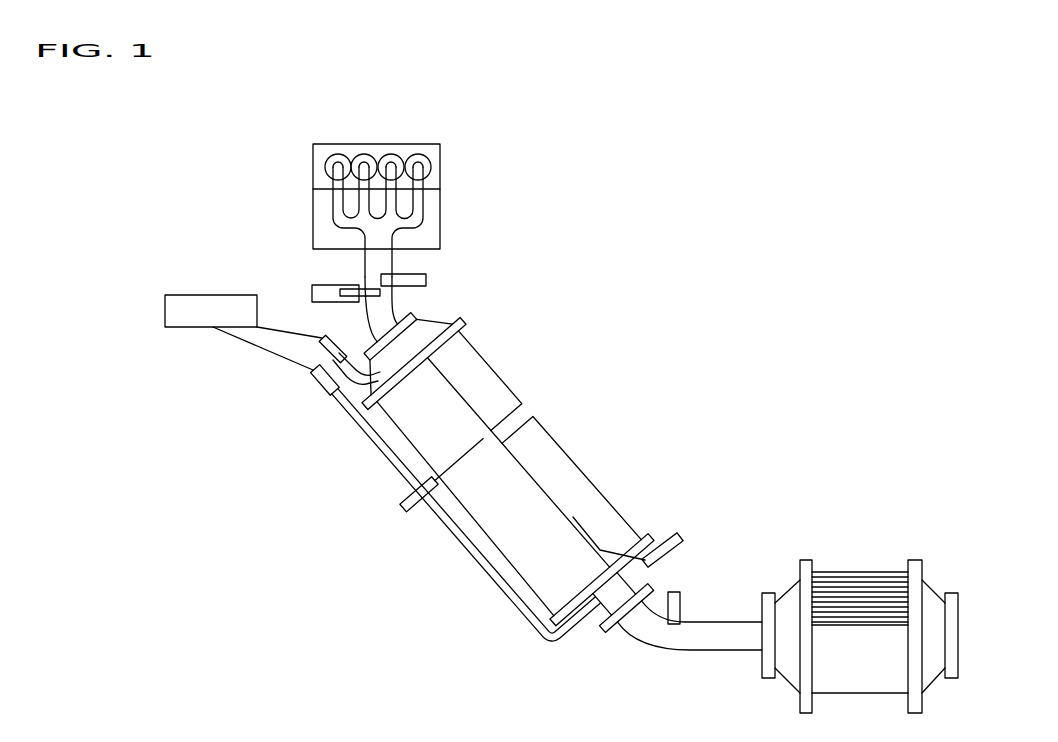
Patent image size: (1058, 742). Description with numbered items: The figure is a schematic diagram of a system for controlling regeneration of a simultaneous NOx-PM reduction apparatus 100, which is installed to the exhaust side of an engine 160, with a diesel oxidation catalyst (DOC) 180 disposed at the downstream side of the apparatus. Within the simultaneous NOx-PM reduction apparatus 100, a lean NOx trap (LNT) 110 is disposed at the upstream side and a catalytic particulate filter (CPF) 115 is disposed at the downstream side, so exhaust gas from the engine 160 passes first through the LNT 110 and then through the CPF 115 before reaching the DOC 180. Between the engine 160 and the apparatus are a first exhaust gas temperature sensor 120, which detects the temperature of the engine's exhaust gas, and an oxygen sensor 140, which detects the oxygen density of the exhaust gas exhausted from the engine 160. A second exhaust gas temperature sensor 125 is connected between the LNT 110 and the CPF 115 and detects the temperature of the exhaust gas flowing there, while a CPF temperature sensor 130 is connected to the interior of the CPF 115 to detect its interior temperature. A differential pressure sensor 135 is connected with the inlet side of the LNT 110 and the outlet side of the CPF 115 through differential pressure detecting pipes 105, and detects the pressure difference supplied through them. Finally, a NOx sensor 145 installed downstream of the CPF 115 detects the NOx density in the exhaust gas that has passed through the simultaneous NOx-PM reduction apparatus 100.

The simultaneous NOx-PM reduction apparatus 100 is at (650, 328).
The differential pressure detecting pipes 105 is at (337, 370).
The lean NOx trap (LNT) 110 is at (485, 375).
The catalytic particulate filter (CPF) 115 is at (573, 476).
The first exhaust gas temperature sensor 120 is at (315, 283).
The second exhaust gas temperature sensor 125 is at (407, 510).
The CPF temperature sensor 130 is at (678, 532).
The differential pressure sensor 135 is at (198, 317).
The oxygen sensor 140 is at (427, 275).
The NOx sensor 145 is at (675, 628).
The engine 160 is at (437, 208).
The diesel oxidation catalyst (DOC) 180 is at (866, 572).